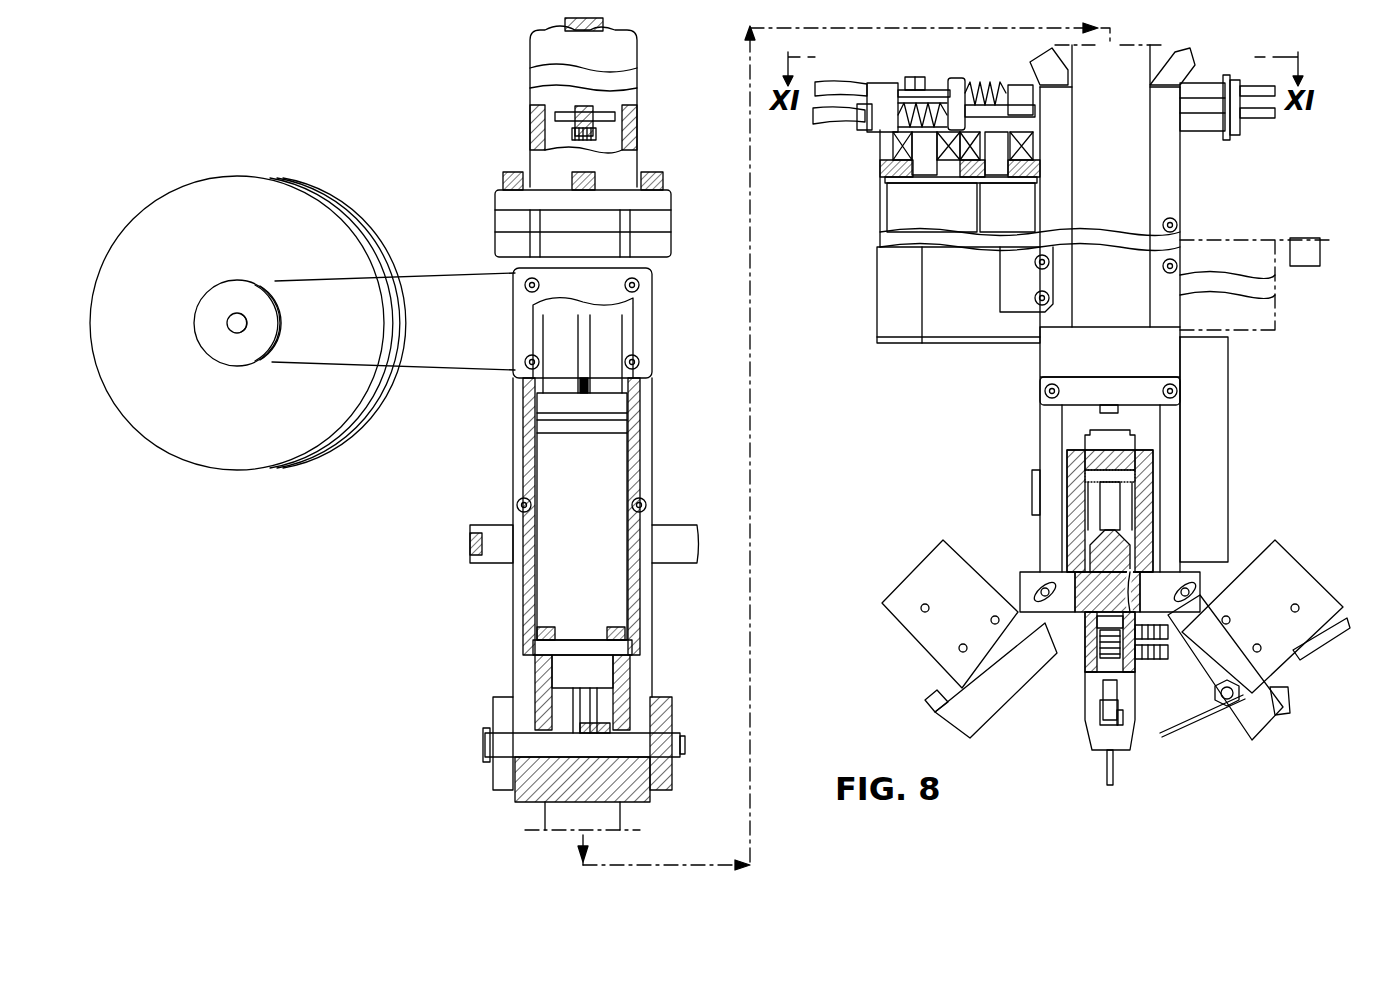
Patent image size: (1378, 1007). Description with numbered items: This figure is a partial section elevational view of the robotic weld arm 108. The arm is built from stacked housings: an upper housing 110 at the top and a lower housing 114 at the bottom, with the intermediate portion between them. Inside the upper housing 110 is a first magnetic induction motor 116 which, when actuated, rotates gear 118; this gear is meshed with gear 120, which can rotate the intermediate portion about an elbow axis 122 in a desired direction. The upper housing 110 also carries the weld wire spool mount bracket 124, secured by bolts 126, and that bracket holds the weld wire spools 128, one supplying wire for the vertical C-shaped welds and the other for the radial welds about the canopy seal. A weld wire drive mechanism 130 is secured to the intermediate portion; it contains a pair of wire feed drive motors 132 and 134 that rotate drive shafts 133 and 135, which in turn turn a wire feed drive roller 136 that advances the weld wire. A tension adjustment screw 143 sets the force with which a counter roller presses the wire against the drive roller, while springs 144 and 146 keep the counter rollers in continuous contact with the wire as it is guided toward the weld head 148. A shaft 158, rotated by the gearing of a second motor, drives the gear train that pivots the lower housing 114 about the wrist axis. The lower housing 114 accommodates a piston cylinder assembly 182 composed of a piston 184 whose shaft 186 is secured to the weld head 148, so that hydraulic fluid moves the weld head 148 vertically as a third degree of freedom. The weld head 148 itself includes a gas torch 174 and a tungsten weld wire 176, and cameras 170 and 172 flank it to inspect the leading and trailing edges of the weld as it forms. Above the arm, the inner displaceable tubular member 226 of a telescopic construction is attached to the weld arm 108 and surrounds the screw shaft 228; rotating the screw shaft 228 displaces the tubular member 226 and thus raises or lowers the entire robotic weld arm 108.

The robotic weld arm 108 is at (685, 664).
The upper housing 110 is at (513, 466).
The lower housing 114 is at (1088, 661).
The first magnetic induction motor 116 is at (615, 477).
The gear 118 is at (518, 692).
The gear 120 is at (640, 786).
The elbow axis 122 is at (485, 746).
The weld wire spool mount bracket 124 is at (485, 295).
The bolts 126 is at (655, 330).
The weld wire spools 128 is at (265, 176).
The weld wire drive mechanism 130 is at (880, 326).
The wire feed drive motor 132 is at (915, 239).
The drive shaft 133 is at (925, 190).
The wire feed drive motor 134 is at (1060, 216).
The drive shaft 135 is at (1000, 165).
The wire feed drive roller 136 is at (945, 80).
The tension adjustment screw 143 is at (860, 121).
The spring 144 is at (985, 90).
The spring 146 is at (898, 143).
The weld head 148 is at (1085, 672).
The shaft 158 is at (1032, 506).
The camera 170 is at (1290, 561).
The camera 172 is at (945, 636).
The gas torch 174 is at (1088, 741).
The tungsten weld wire 176 is at (1115, 764).
The piston cylinder assembly 182 is at (1153, 471).
The piston 184 is at (1080, 447).
The shaft 186 is at (1112, 511).
The inner displaceable tubular member 226 is at (537, 56).
The screw shaft 228 is at (571, 118).